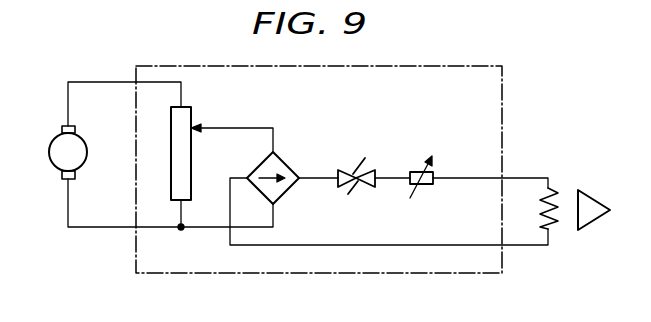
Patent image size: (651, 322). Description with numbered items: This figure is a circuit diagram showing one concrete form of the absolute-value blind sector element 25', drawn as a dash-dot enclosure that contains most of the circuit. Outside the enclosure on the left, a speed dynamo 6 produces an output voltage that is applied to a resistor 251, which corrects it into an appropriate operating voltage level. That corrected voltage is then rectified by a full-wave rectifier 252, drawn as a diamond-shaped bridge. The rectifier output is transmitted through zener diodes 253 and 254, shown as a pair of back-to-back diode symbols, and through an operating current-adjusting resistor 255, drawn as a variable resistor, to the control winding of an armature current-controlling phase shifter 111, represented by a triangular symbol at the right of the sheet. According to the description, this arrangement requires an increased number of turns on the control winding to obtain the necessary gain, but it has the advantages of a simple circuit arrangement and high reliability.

The speed dynamo 6 is at (49, 158).
The absolute-value blind sector element 25' is at (308, 190).
The resistor 251 is at (192, 139).
The full-wave rectifier 252 is at (285, 162).
The zener diode 253 is at (352, 168).
The zener diode 254 is at (364, 192).
The operating current-adjusting resistor 255 is at (428, 184).
The armature current-controlling phase shifter 111 is at (592, 221).